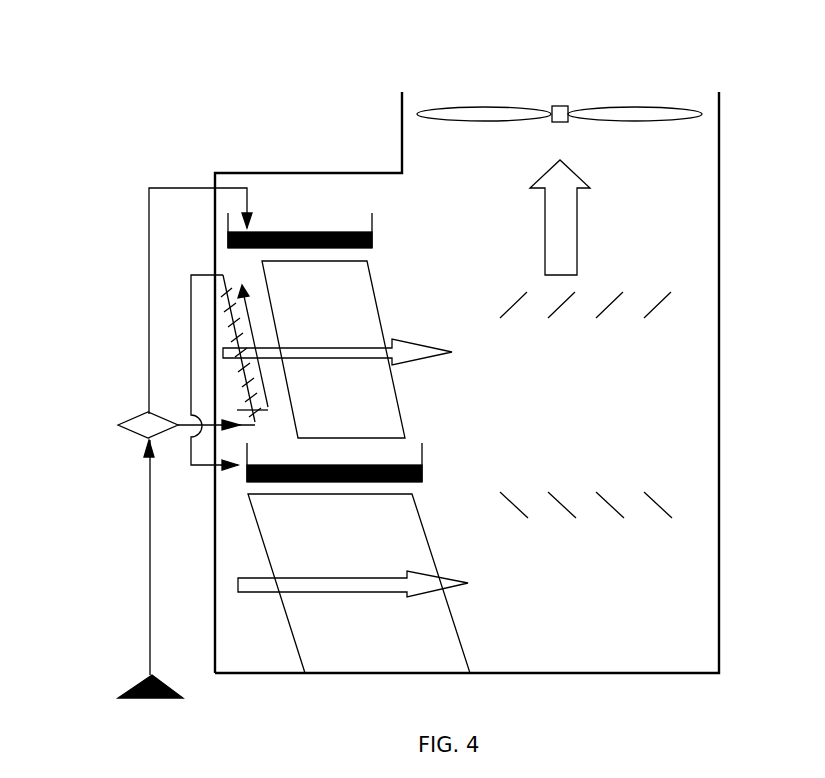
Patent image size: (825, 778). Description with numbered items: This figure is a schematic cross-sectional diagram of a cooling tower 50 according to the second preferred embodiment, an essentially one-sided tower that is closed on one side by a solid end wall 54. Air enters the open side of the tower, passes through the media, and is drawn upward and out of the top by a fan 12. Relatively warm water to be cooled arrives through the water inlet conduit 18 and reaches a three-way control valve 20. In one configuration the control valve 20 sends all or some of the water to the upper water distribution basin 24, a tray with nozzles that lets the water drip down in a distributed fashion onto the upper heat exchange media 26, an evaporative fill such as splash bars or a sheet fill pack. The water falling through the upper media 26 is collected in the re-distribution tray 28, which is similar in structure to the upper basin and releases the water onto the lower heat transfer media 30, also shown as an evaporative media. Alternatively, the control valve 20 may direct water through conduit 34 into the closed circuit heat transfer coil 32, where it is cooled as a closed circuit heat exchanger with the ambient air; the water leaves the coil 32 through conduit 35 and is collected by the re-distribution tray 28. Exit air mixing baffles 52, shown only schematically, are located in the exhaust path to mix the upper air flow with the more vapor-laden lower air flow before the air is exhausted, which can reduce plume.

The fan 12 is at (558, 80).
The water inlet conduit 18 is at (134, 688).
The control valve 20 is at (117, 427).
The upper water distribution basin 24 is at (374, 221).
The upper heat exchange media 26 is at (332, 297).
The re-distribution tray 28 is at (424, 452).
The lower heat transfer media 30 is at (349, 531).
The closed circuit heat transfer coil 32 is at (240, 370).
The conduit 34 is at (187, 425).
The conduit 35 is at (190, 288).
The tower 50 is at (287, 85).
The exit air mixing baffles 52 is at (660, 305).
The solid end wall 54 is at (719, 400).